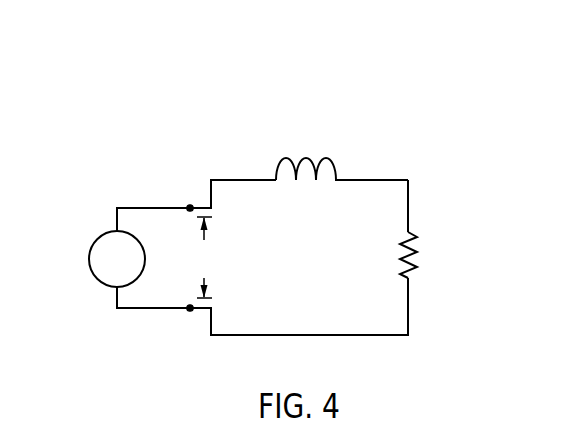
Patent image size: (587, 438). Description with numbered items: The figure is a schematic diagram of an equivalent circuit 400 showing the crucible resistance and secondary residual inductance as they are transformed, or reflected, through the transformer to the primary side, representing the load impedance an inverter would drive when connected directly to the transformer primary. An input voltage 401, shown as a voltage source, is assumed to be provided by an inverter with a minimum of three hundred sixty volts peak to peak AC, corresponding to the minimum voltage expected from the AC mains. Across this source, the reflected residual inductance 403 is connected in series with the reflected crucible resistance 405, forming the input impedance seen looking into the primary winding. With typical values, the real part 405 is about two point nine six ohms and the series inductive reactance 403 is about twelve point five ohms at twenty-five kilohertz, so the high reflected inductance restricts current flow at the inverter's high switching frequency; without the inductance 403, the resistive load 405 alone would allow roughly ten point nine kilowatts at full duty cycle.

The equivalent circuit 400 is at (431, 81).
The input voltage 401 is at (99, 237).
The residual inductance 403 is at (270, 172).
The crucible resistance 405 is at (415, 273).